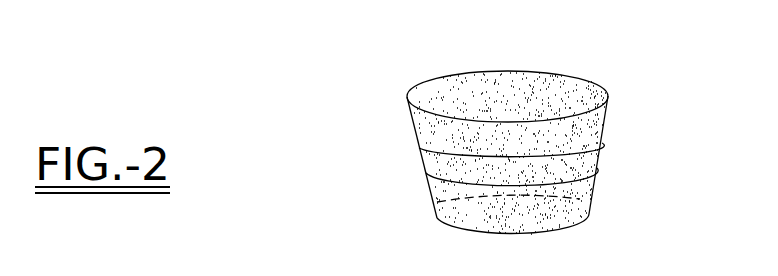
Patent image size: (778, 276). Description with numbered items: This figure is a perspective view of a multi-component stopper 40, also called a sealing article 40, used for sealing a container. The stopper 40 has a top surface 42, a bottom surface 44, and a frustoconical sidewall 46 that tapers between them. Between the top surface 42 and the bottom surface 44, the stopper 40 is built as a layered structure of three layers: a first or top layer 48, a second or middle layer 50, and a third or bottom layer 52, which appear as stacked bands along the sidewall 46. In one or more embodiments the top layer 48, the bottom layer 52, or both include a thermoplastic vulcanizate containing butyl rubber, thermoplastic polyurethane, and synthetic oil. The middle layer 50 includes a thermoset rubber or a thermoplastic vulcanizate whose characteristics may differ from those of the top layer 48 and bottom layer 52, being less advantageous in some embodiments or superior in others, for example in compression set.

The multi-component stopper 40 is at (400, 84).
The top surface 42 is at (558, 90).
The bottom surface 44 is at (548, 232).
The frustoconical sidewall 46 is at (427, 195).
The top layer 48 is at (607, 121).
The middle layer 50 is at (600, 158).
The bottom layer 52 is at (588, 207).